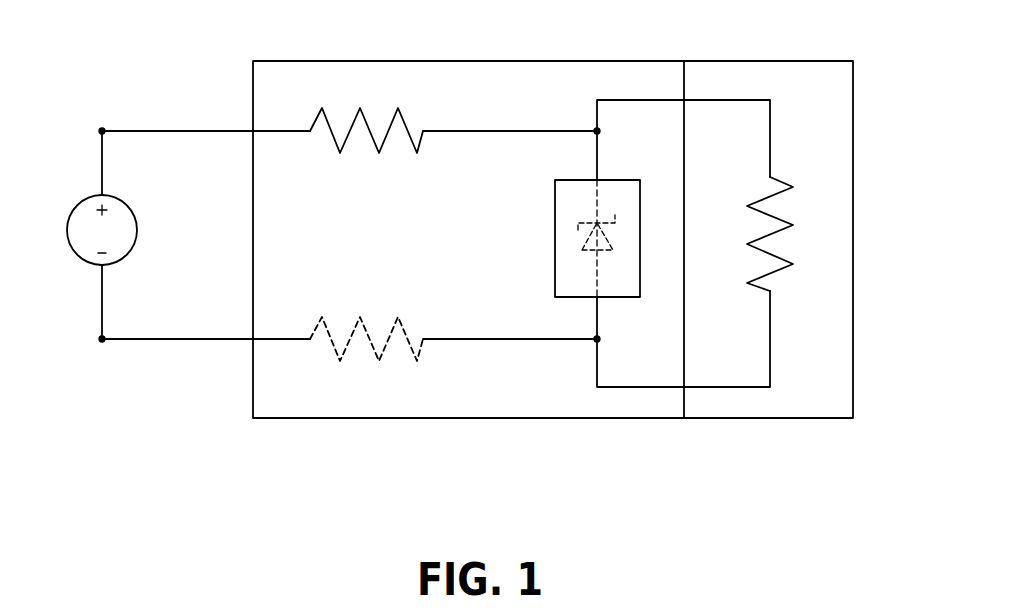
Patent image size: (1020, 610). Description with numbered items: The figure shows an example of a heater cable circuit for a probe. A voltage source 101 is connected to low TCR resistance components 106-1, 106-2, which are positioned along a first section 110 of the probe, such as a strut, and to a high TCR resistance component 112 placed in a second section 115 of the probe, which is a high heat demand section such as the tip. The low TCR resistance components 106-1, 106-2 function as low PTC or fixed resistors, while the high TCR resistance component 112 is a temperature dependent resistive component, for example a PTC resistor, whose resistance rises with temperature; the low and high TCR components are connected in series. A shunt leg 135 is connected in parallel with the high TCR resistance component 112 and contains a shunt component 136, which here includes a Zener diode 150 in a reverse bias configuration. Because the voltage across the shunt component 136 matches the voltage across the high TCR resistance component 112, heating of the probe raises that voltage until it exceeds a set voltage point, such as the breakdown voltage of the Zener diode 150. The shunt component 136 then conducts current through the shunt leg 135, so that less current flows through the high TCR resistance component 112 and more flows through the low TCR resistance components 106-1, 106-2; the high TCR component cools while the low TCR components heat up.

The voltage source 101 is at (65, 230).
The low TCR resistance component 106-1 is at (360, 108).
The low TCR resistance component 106-2 is at (340, 361).
The first section 110 is at (288, 383).
The high TCR resistance component 112 is at (780, 215).
The second section 115 is at (817, 390).
The shunt leg 135 is at (600, 155).
The shunt component 136 is at (618, 297).
The Zener diode 150 is at (582, 252).